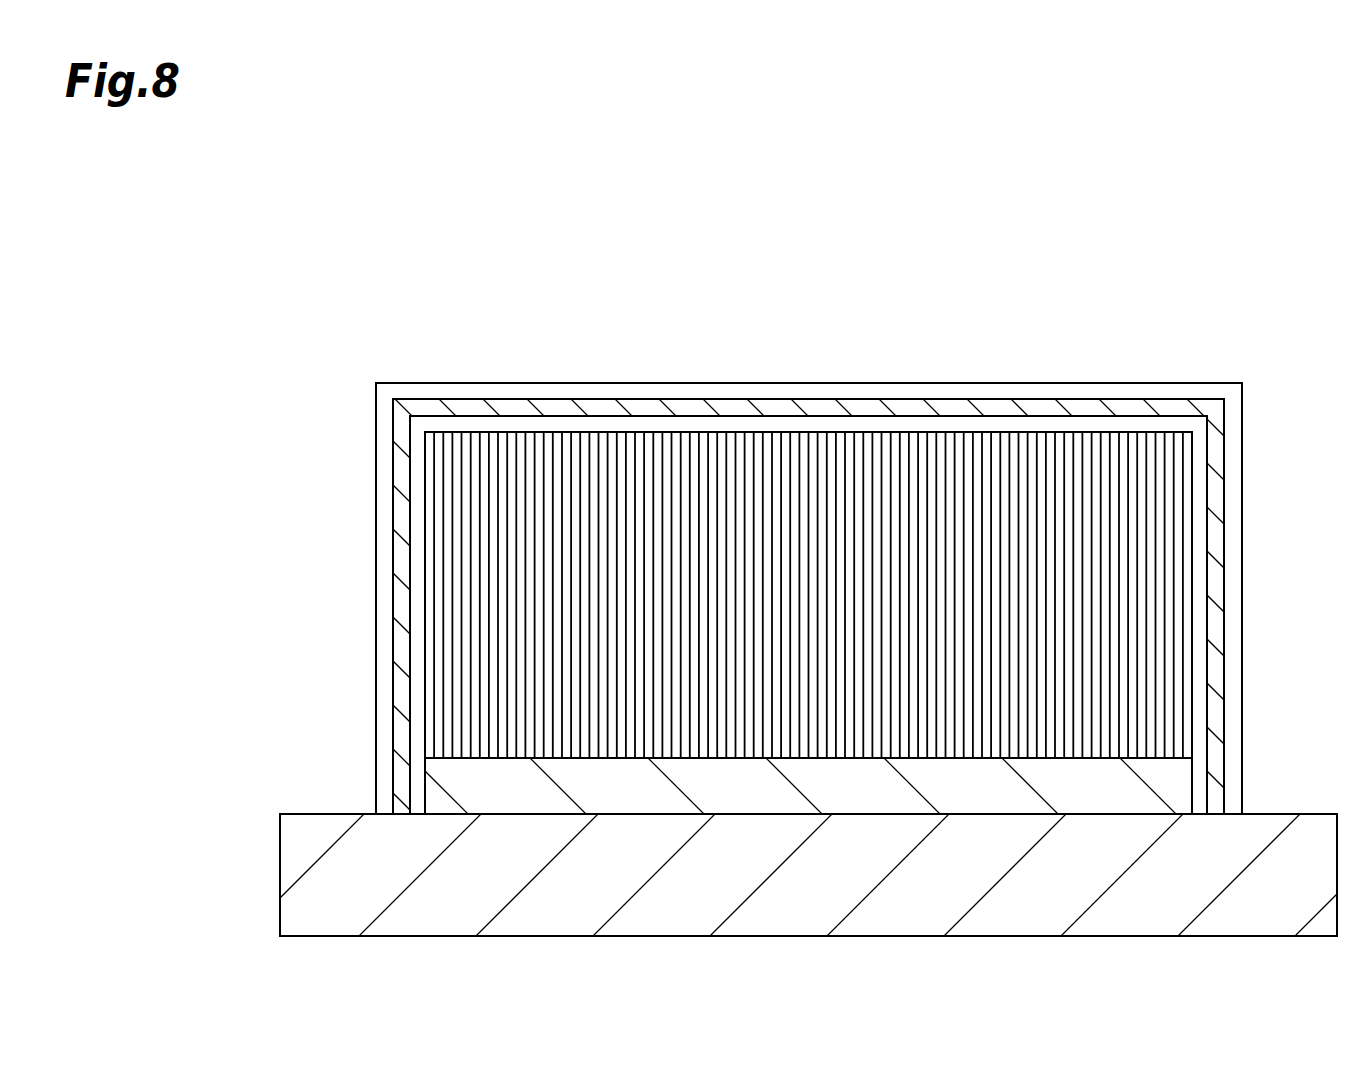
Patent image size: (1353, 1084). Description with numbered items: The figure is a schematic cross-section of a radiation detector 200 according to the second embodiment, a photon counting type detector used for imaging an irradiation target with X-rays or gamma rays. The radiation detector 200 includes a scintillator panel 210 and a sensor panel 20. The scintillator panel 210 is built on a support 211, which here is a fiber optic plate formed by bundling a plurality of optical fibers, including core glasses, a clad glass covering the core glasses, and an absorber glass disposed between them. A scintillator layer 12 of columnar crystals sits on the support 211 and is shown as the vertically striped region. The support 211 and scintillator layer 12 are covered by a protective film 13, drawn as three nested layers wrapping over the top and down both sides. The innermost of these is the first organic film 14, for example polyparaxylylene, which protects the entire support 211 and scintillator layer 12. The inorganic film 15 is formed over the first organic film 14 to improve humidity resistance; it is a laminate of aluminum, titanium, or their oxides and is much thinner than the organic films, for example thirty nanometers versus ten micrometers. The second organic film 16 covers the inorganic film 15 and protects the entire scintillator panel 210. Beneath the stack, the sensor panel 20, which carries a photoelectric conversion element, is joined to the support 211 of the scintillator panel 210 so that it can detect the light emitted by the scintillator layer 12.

The radiation detector 200 is at (1197, 298).
The sensor panel 20 is at (258, 889).
The scintillator panel 210 is at (346, 597).
The protective film 13 is at (543, 310).
The first organic film 14 is at (515, 420).
The inorganic film 15 is at (464, 407).
The second organic film 16 is at (410, 386).
The scintillator layer 12 is at (1198, 573).
The support 211 is at (1172, 783).